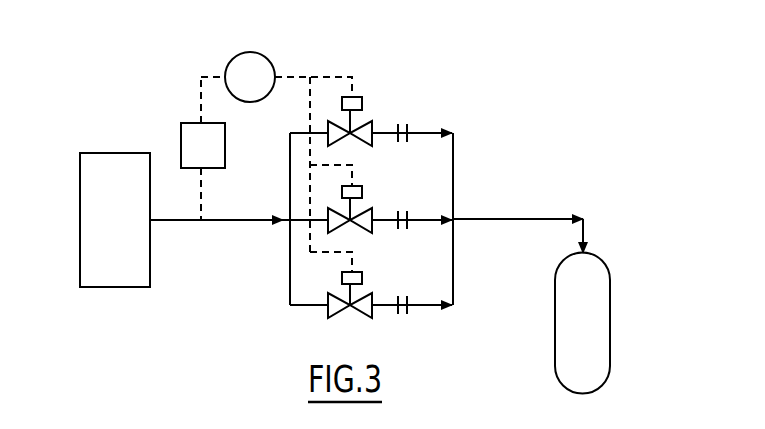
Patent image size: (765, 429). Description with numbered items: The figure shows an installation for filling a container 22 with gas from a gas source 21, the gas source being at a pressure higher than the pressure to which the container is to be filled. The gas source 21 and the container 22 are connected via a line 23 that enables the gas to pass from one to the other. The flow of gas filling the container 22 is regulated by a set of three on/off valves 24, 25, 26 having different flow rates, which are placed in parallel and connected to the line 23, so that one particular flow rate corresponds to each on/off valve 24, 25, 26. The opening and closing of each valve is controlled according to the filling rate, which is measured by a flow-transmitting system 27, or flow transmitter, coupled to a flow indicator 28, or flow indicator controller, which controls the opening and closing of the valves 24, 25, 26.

The gas source 21 is at (78, 190).
The container 22 is at (611, 318).
The line 23 is at (243, 222).
The on/off valve 24 is at (372, 126).
The on/off valve 25 is at (373, 213).
The on/off valve 26 is at (373, 298).
The flow-transmitting system 27 is at (197, 122).
The flow indicator 28 is at (262, 55).